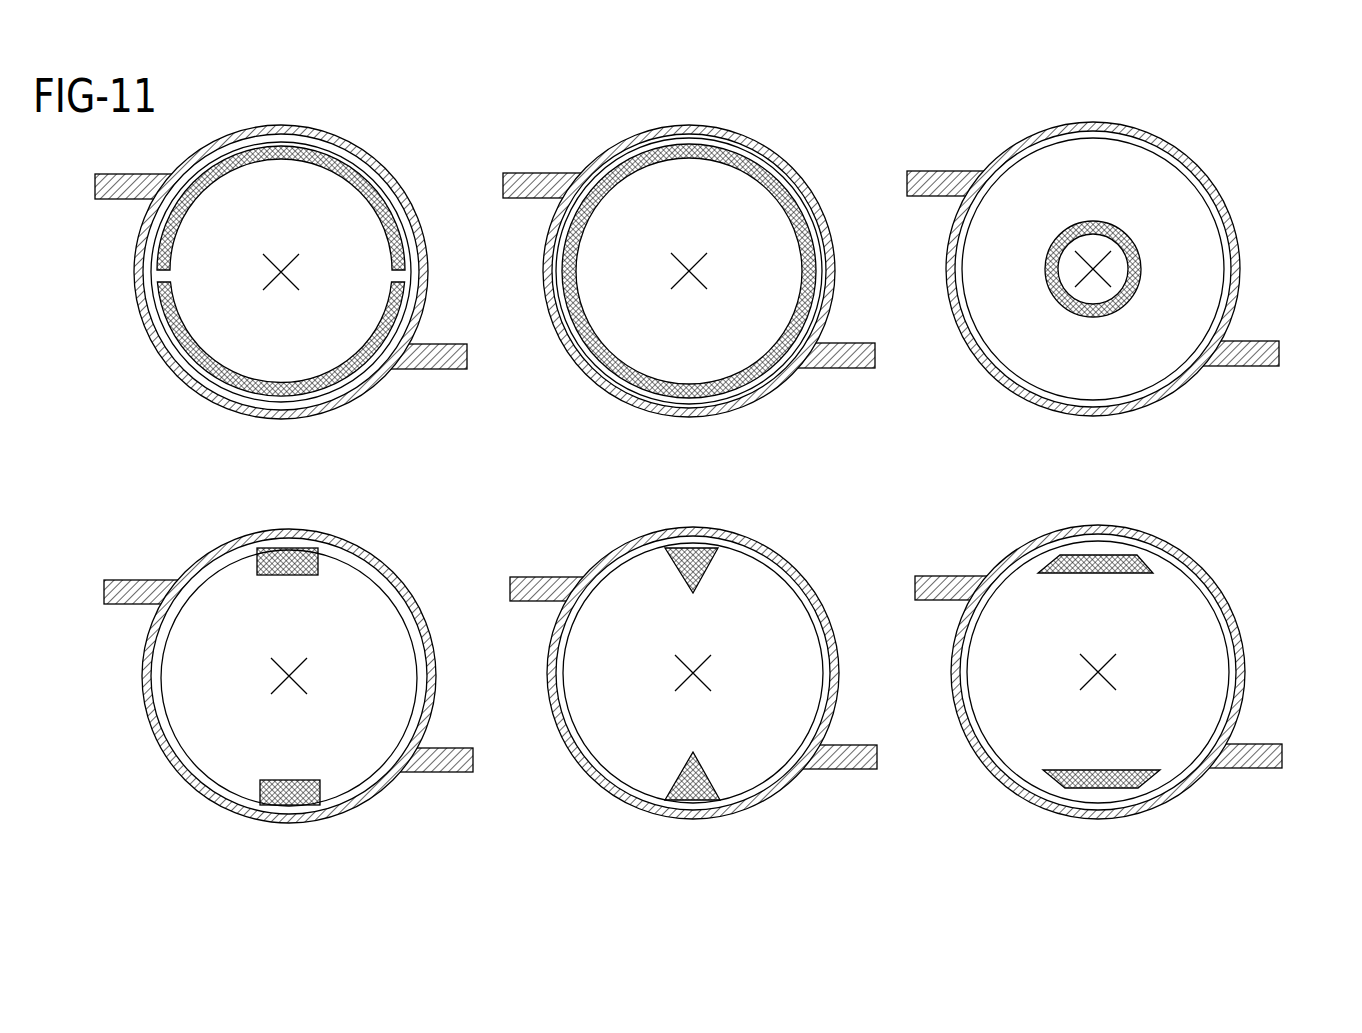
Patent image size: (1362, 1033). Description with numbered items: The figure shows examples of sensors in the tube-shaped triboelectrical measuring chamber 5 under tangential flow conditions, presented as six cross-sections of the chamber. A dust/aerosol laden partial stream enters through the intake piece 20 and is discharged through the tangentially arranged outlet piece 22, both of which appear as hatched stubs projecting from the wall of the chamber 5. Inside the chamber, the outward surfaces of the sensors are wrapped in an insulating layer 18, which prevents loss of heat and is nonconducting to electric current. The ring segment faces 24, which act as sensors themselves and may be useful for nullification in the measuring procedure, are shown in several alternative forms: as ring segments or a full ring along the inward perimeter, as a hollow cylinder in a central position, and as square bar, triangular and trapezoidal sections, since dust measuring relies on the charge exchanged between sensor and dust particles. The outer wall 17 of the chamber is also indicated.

The triboelectrical measuring chamber 5 is at (725, 450).
The outer wall 17 is at (218, 137).
The insulating layer 18 is at (256, 140).
The intake piece 20 is at (128, 175).
The outlet piece 22 is at (423, 337).
The ring segment faces 24 is at (398, 222).